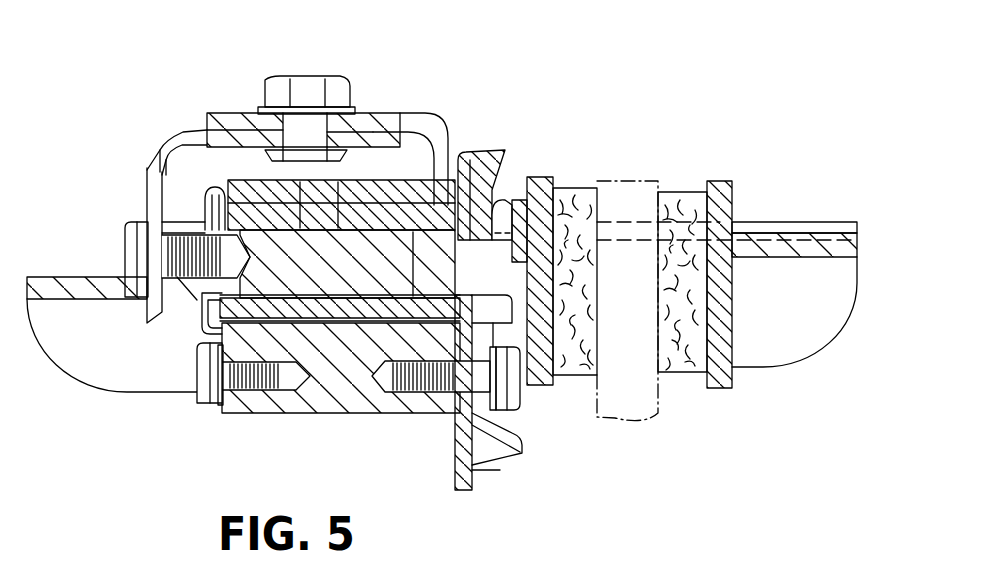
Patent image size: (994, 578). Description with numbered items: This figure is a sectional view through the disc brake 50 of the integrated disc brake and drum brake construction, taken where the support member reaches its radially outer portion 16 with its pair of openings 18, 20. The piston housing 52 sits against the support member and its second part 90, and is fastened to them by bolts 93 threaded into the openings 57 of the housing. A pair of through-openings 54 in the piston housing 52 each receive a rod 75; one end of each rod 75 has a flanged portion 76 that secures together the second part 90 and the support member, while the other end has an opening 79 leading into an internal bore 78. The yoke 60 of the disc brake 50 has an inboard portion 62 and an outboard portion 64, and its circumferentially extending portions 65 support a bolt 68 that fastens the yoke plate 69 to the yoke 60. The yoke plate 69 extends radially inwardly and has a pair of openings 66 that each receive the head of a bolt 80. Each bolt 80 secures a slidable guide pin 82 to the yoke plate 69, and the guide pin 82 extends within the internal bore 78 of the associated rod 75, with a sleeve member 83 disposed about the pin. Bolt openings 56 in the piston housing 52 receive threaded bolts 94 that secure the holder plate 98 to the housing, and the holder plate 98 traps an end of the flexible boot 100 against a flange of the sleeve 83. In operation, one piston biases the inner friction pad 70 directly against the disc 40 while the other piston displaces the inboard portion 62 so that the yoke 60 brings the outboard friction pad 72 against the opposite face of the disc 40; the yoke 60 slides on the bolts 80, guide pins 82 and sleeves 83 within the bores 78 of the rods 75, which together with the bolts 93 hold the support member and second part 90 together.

The radially outer portion 16 is at (457, 468).
The opening 18 is at (487, 425).
The opening 20 is at (478, 205).
The disc 40 is at (654, 414).
The disc brake 50 is at (585, 113).
The piston housing 52 is at (363, 413).
The through-opening 54 is at (433, 197).
The bolt opening 56 is at (263, 413).
The opening 57 is at (423, 413).
The yoke 60 is at (774, 222).
The inboard portion 62 is at (87, 339).
The outboard portion 64 is at (825, 316).
The circumferentially extending portion 65 is at (375, 114).
The opening 66 is at (147, 204).
The bolt 68 is at (350, 93).
The yoke plate 69 is at (168, 148).
The inner friction pad 70 is at (562, 188).
The outboard friction pad 72 is at (682, 192).
The rod 75 is at (377, 217).
The flanged portion 76 is at (508, 213).
The internal bore 78 is at (303, 205).
The opening 79 is at (243, 200).
The bolt 80 is at (125, 242).
The slidable guide pin 82 is at (375, 276).
The sleeve member 83 is at (338, 205).
The second part 90 is at (492, 452).
The bolt 93 is at (520, 398).
The threaded bolt 94 is at (200, 397).
The holder plate 98 is at (222, 407).
The flexible boot 100 is at (203, 327).